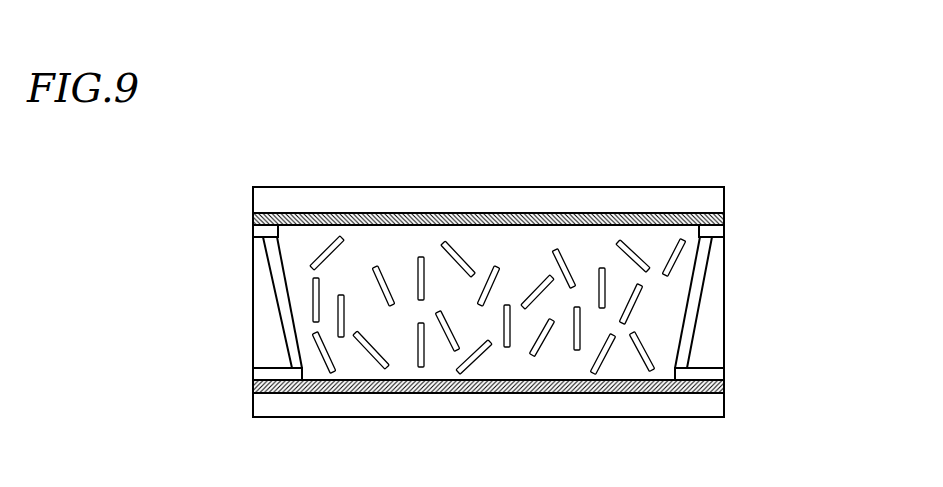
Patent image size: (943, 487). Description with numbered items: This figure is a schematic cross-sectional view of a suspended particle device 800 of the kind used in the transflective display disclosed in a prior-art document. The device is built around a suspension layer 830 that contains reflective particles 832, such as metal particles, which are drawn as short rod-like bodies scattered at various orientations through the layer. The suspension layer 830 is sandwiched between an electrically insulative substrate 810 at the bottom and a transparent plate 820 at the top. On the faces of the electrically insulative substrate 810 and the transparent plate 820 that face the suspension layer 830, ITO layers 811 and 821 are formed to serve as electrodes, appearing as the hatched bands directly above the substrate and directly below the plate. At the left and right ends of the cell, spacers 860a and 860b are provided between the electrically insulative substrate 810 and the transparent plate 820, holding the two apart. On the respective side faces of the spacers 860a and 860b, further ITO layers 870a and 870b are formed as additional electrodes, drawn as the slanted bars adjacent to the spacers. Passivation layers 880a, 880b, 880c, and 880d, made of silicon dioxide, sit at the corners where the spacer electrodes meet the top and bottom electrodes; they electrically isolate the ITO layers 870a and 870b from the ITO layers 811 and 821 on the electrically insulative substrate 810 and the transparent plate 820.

The suspended particle device 800 is at (777, 176).
The electrically insulative substrate 810 is at (265, 408).
The ITO layer 811 is at (258, 388).
The transparent plate 820 is at (265, 197).
The ITO layer 821 is at (264, 221).
The suspension layer 830 is at (748, 227).
The reflective particles 832 is at (325, 245).
The spacer 860a is at (270, 298).
The spacer 860b is at (713, 312).
The ITO layer 870a is at (290, 327).
The ITO layer 870b is at (685, 358).
The passivation layer 880a is at (258, 375).
The passivation layer 880b is at (262, 232).
The passivation layer 880c is at (707, 373).
The passivation layer 880d is at (713, 232).